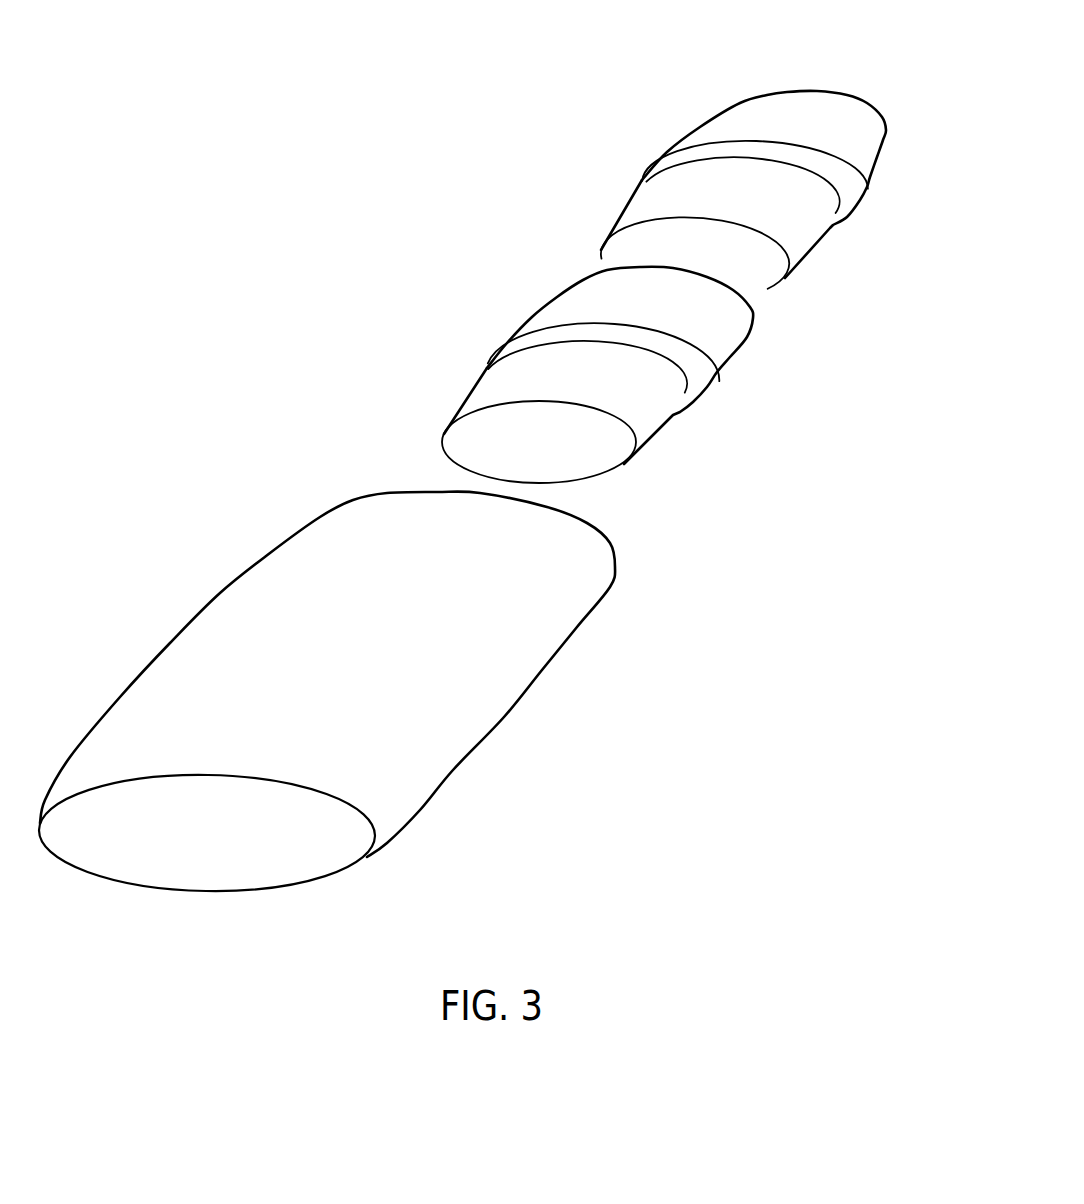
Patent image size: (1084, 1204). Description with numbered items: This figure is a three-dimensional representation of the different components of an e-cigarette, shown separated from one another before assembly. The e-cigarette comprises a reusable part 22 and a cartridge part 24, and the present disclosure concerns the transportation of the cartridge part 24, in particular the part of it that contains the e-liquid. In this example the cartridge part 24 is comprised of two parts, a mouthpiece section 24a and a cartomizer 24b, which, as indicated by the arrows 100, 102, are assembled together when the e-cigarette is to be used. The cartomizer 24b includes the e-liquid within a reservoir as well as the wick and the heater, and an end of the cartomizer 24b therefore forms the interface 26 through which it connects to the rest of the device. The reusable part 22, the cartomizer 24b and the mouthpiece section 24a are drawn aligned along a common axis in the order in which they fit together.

The arrow 100 is at (486, 472).
The arrow 102 is at (486, 472).
The reusable part 22 is at (656, 589).
The cartridge part 24 is at (687, 287).
The mouthpiece section 24a is at (740, 103).
The cartomizer 24b is at (597, 380).
The interface 26 is at (544, 463).